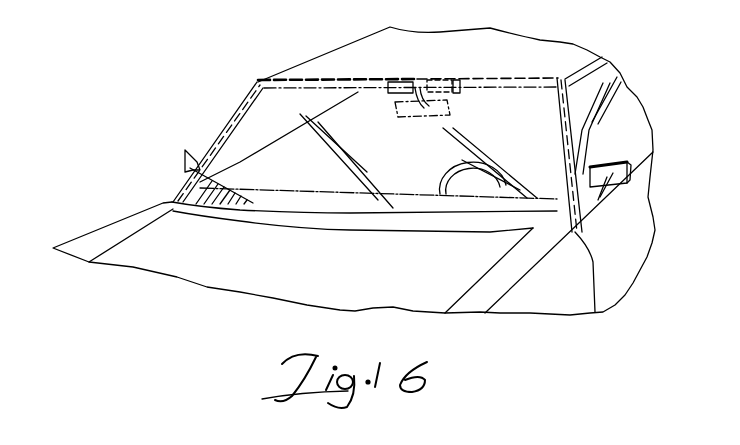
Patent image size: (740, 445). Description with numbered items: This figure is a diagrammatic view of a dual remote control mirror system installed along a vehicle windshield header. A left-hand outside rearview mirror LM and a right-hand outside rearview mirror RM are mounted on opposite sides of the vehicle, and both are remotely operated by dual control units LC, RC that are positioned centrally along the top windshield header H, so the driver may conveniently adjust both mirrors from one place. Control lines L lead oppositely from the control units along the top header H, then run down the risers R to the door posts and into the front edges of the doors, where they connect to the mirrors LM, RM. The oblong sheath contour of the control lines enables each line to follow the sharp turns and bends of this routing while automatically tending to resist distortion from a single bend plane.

The control lines L is at (335, 76).
The risers R is at (230, 118).
The top windshield header H is at (331, 94).
The right-hand control unit RC is at (384, 96).
The left-hand control unit LC is at (462, 90).
The right-hand outside rearview mirror RM is at (182, 163).
The left-hand outside rearview mirror LM is at (623, 153).